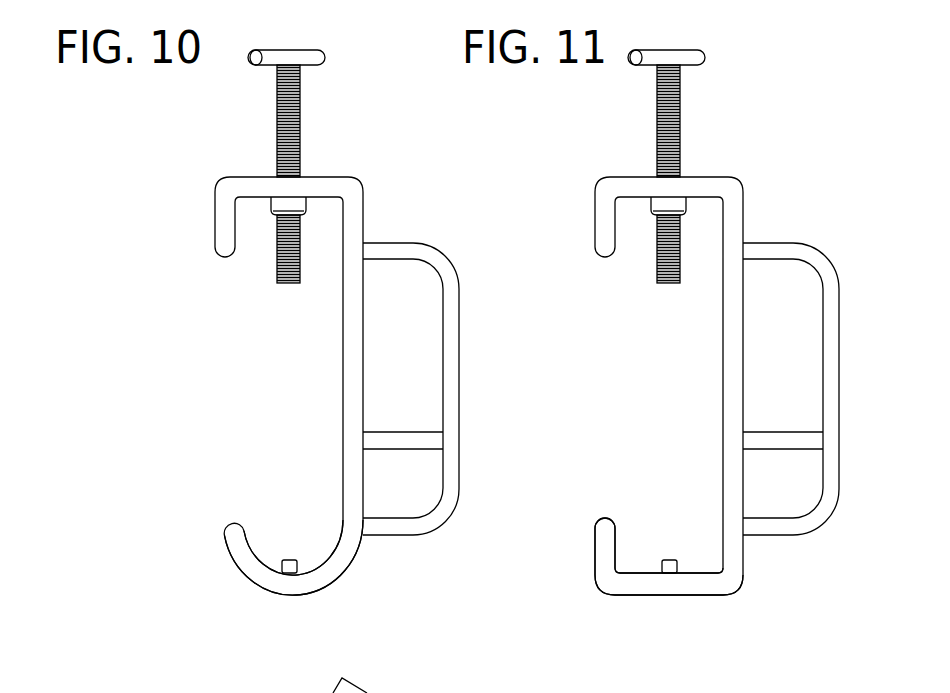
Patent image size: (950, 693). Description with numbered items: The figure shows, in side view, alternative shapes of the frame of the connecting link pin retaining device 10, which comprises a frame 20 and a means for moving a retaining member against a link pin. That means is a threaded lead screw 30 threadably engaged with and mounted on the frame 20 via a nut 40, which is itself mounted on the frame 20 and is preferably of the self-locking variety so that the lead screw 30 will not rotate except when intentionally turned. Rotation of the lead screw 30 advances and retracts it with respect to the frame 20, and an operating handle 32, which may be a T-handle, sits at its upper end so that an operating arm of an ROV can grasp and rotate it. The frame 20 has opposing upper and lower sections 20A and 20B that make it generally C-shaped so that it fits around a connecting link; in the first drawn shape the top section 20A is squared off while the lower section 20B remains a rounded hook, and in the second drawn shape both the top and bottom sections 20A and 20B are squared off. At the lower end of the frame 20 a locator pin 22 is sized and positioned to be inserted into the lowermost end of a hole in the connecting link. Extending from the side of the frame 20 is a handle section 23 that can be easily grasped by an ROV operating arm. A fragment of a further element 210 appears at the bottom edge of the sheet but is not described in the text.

In FIG. 10, the retaining device 10 is at (390, 185).
In FIG. 11, the retaining device 10 is at (768, 602).
In FIG. 10, the frame 20 is at (331, 570).
In FIG. 11, the frame 20 is at (727, 555).
In FIG. 10, the upper section 20A is at (188, 176).
In FIG. 11, the upper section 20A is at (568, 176).
In FIG. 10, the lower section 20B is at (188, 524).
In FIG. 11, the lower section 20B is at (568, 524).
In FIG. 10, the locator pin 22 is at (290, 558).
In FIG. 11, the locator pin 22 is at (668, 558).
In FIG. 10, the handle section 23 is at (448, 447).
In FIG. 11, the handle section 23 is at (828, 373).
In FIG. 10, the lead screw 30 is at (298, 107).
In FIG. 11, the lead screw 30 is at (675, 258).
In FIG. 10, the operating handle 32 is at (315, 56).
In FIG. 11, the operating handle 32 is at (698, 57).
In FIG. 10, the nut 40 is at (288, 206).
In FIG. 11, the nut 40 is at (677, 205).
In FIG. 10, the mounting member 210 is at (300, 692).